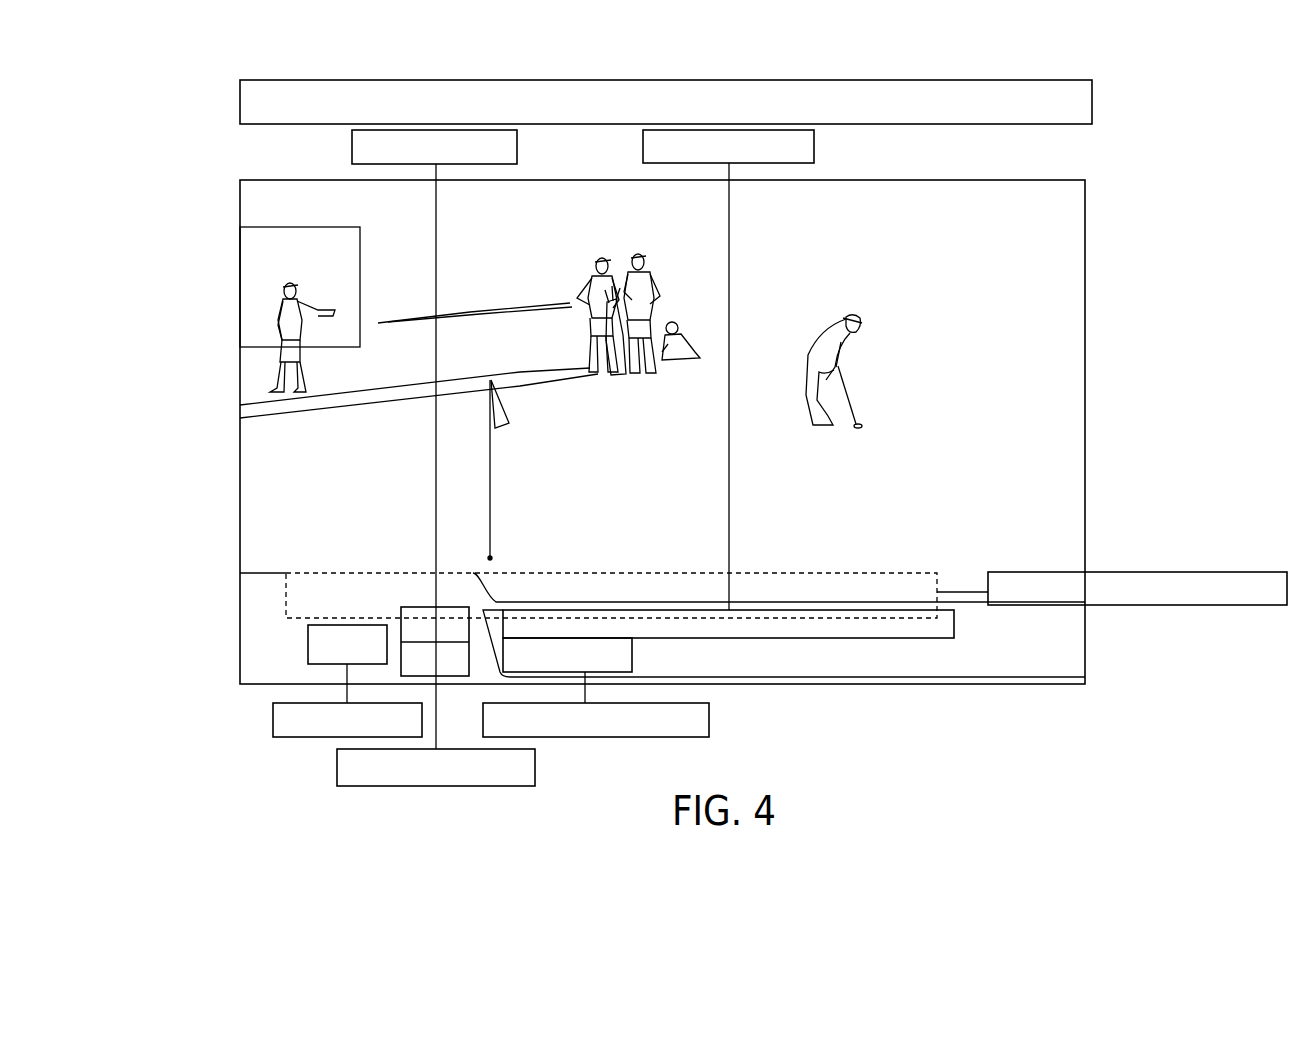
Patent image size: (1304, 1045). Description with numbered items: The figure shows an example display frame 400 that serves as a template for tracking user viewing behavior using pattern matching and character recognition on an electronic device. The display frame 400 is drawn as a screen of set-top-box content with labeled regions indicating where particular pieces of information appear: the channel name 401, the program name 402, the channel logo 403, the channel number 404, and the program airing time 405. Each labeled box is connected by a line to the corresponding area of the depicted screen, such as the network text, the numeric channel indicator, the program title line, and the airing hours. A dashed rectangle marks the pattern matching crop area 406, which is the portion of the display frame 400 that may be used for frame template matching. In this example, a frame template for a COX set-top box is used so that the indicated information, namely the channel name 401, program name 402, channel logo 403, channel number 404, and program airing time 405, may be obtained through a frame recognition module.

The display frame 400 is at (1003, 46).
The channel name 401 is at (517, 147).
The program name 402 is at (814, 147).
The channel logo 403 is at (273, 718).
The channel number 404 is at (337, 766).
The program airing time 405 is at (709, 720).
The pattern matching crop area 406 is at (1132, 606).